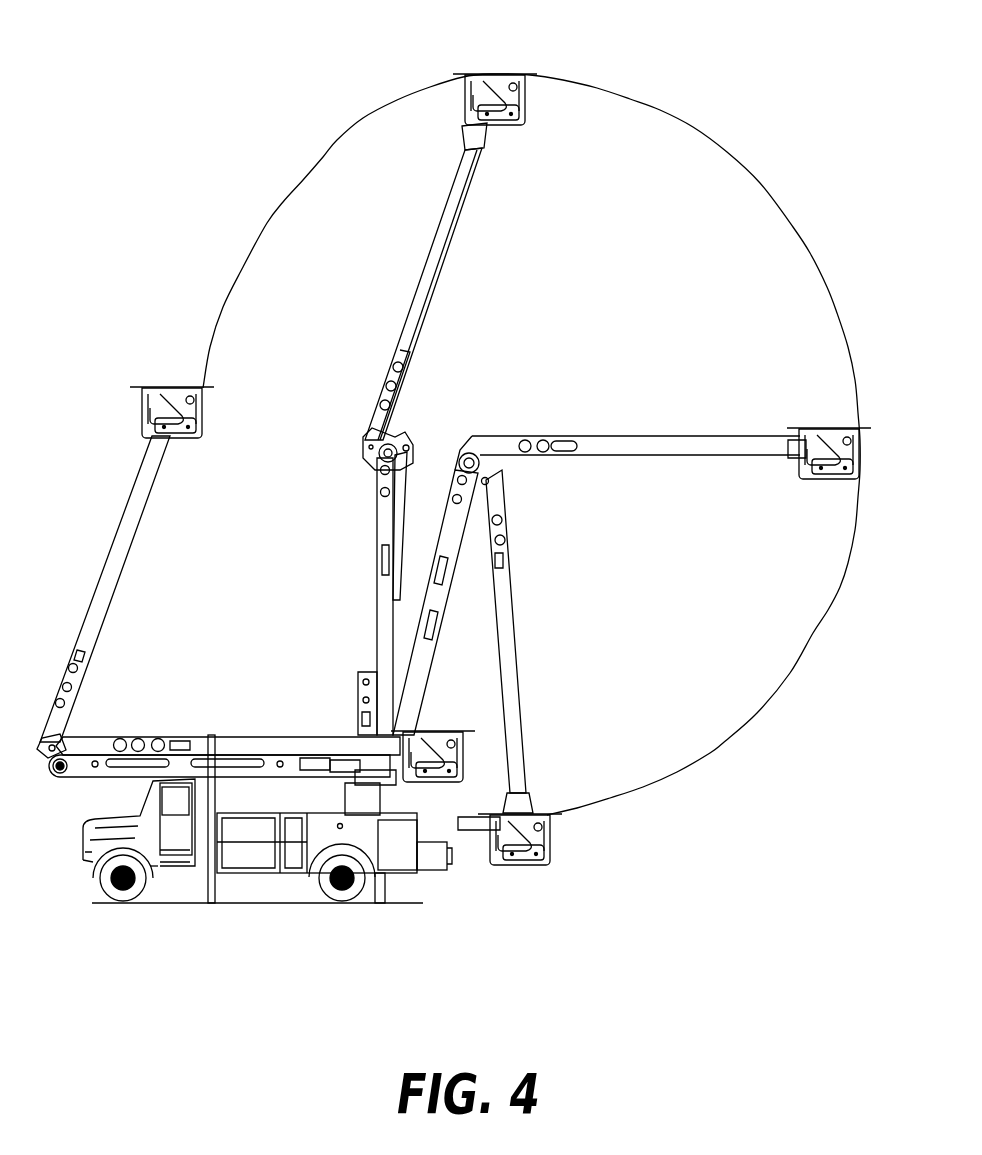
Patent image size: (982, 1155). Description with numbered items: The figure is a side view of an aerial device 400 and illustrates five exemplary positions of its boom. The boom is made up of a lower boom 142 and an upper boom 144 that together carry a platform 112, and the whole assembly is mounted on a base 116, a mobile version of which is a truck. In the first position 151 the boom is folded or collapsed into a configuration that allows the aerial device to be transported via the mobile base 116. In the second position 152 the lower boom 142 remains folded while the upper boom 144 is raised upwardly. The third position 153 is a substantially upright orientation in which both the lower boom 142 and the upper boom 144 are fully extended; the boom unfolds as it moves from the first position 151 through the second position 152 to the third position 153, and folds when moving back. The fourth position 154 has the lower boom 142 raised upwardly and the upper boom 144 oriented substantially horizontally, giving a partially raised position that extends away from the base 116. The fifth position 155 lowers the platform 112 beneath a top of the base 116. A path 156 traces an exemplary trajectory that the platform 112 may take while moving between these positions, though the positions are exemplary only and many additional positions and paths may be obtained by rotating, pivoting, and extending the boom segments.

The aerial device 400 is at (130, 70).
The platform 112 is at (543, 868).
The base 116 is at (270, 880).
The lower boom 142 is at (388, 574).
The upper boom 144 is at (431, 268).
The first position 151 is at (246, 703).
The second position 152 is at (92, 494).
The third position 153 is at (446, 128).
The fourth position 154 is at (810, 358).
The fifth position 155 is at (588, 779).
The path 156 is at (282, 202).